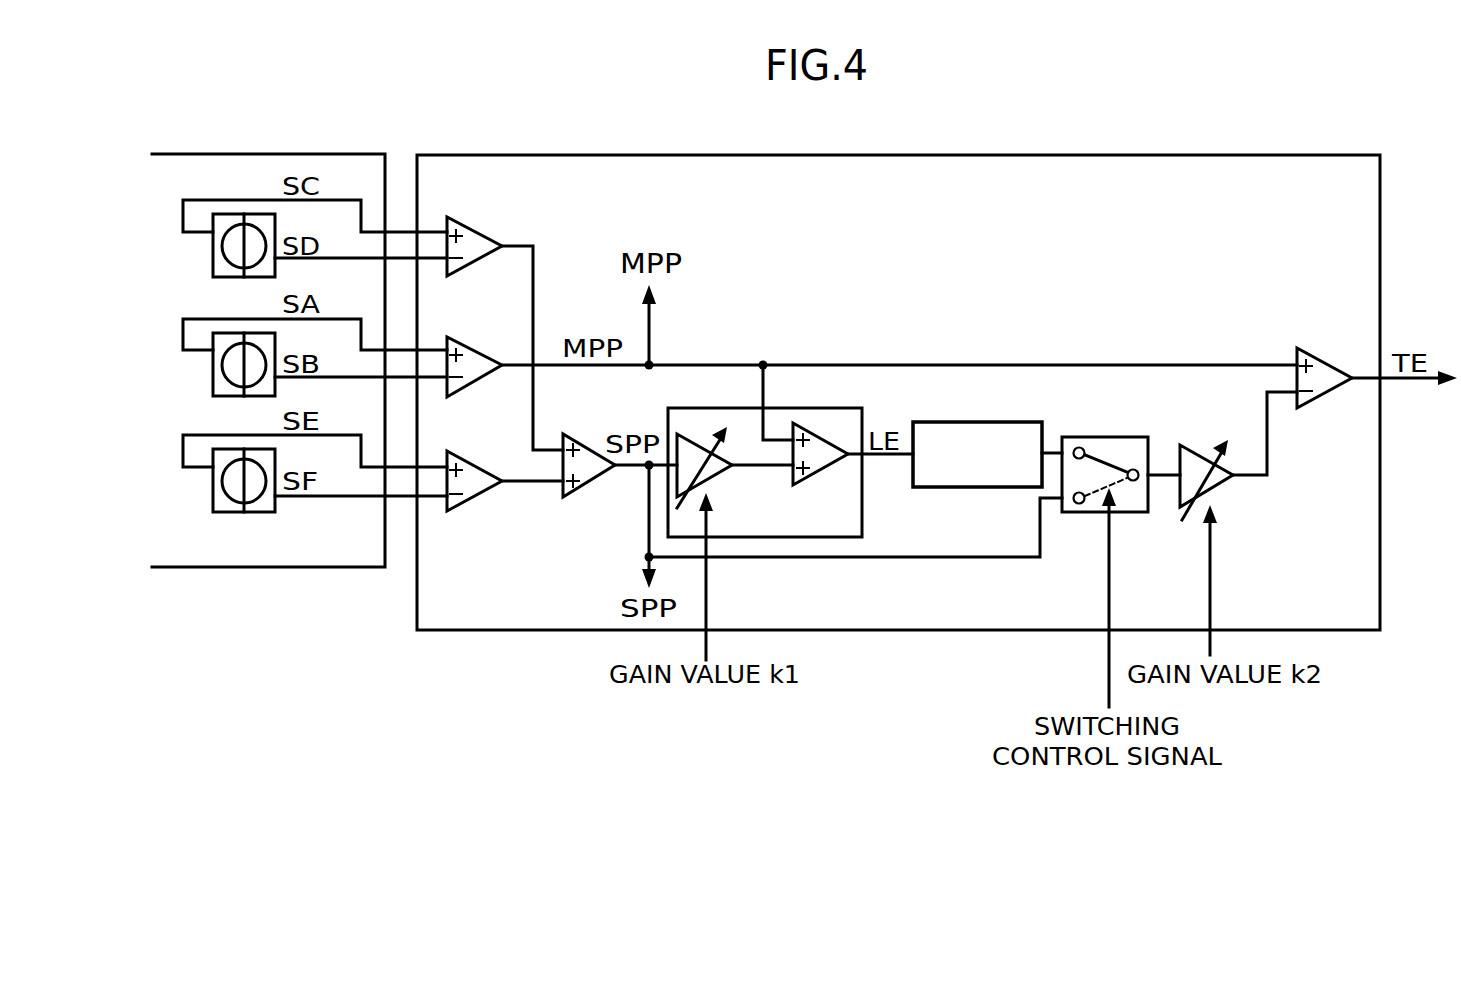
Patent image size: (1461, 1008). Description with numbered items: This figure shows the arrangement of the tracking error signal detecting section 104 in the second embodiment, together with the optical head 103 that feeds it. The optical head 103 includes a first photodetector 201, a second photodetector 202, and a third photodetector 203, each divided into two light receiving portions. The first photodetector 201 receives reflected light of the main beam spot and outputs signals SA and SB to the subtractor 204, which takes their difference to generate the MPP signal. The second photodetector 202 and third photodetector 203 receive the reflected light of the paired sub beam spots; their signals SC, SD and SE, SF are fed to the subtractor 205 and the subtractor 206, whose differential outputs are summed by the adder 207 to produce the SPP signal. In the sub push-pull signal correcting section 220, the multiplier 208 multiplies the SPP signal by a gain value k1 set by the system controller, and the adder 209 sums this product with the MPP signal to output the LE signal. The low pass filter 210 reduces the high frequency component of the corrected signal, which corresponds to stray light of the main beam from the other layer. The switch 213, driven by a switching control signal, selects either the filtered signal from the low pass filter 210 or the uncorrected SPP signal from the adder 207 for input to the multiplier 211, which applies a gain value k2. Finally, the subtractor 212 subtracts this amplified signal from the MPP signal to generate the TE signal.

The optical head 103 is at (293, 567).
The tracking error signal detecting section 104 is at (440, 630).
The first photodetector 201 is at (213, 386).
The second photodetector 202 is at (213, 268).
The third photodetector 203 is at (213, 504).
The subtractor 204 is at (477, 385).
The subtractor 205 is at (477, 265).
The subtractor 206 is at (477, 500).
The adder 207 is at (592, 480).
The multiplier 208 is at (717, 477).
The adder 209 is at (815, 475).
The low pass filter 210 is at (978, 487).
The multiplier 211 is at (1228, 488).
The subtractor 212 is at (1318, 398).
The switch 213 is at (1122, 512).
The sub push-pull signal correcting section 220 is at (825, 408).